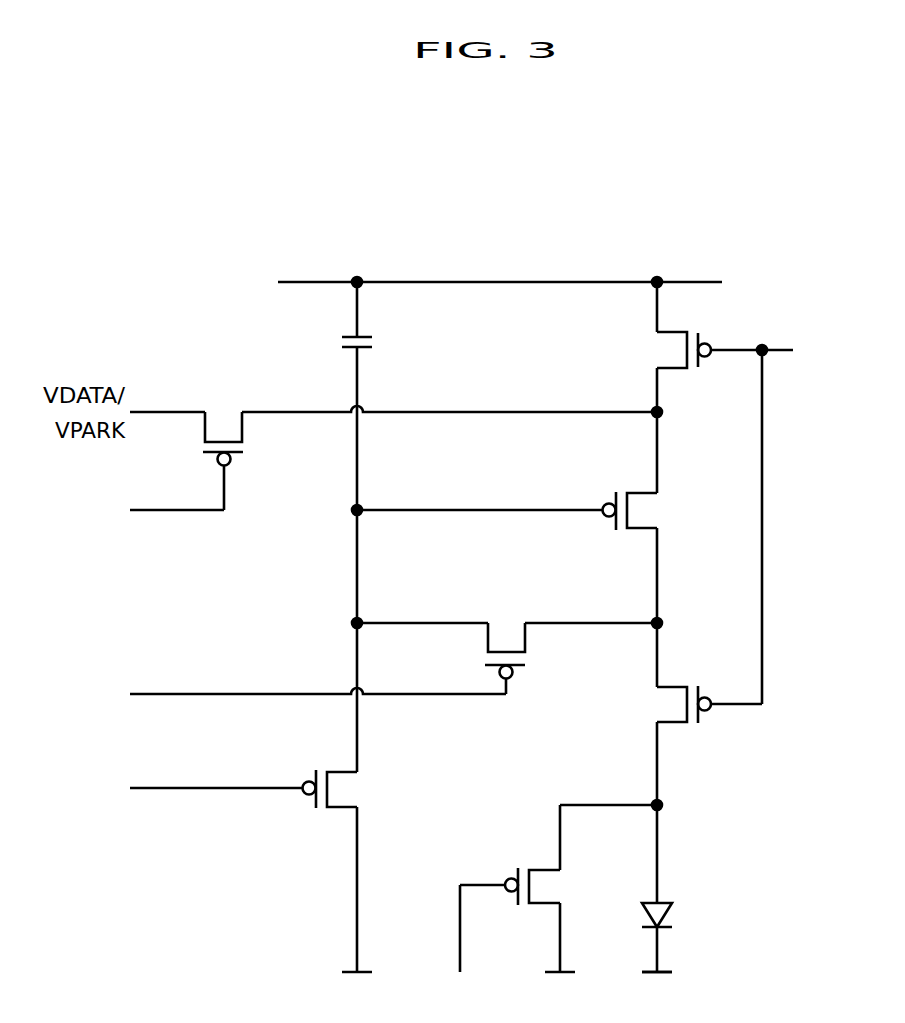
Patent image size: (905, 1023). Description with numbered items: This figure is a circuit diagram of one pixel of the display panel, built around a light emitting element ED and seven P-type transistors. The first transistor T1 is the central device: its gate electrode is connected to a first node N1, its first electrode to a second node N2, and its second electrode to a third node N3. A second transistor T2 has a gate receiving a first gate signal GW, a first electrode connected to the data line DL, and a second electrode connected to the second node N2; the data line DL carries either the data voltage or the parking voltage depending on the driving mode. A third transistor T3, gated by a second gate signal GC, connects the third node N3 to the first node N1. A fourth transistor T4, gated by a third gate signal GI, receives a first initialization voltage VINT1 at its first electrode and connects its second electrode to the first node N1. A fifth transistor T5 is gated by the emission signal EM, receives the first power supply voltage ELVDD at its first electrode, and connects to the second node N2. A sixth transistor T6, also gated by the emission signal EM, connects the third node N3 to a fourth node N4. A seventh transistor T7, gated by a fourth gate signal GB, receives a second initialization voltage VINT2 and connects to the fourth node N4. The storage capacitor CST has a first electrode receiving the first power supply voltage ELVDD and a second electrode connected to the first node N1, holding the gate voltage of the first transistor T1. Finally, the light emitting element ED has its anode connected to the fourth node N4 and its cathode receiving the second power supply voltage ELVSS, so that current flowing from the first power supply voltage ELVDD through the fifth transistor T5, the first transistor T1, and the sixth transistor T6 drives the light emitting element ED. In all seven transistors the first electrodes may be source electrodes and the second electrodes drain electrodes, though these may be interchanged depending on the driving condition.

The first transistor T1 is at (645, 511).
The second transistor T2 is at (223, 447).
The third transistor T3 is at (505, 646).
The fourth transistor T4 is at (344, 789).
The fifth transistor T5 is at (711, 350).
The sixth transistor T6 is at (695, 704).
The seventh transistor T7 is at (548, 886).
The storage capacitor CST is at (383, 527).
The light emitting element ED is at (673, 915).
The data line DL is at (168, 412).
The first node N1 is at (462, 510).
The second node N2 is at (674, 415).
The third node N3 is at (524, 627).
The fourth node N4 is at (628, 833).
The first power supply voltage ELVDD is at (500, 269).
The second power supply voltage ELVSS is at (657, 988).
The emission signal EM is at (793, 521).
The first gate signal GW is at (160, 510).
The second gate signal GC is at (301, 695).
The third gate signal GI is at (199, 790).
The fourth gate signal GB is at (476, 945).
The first initialization voltage VINT1 is at (358, 906).
The second initialization voltage VINT2 is at (562, 954).